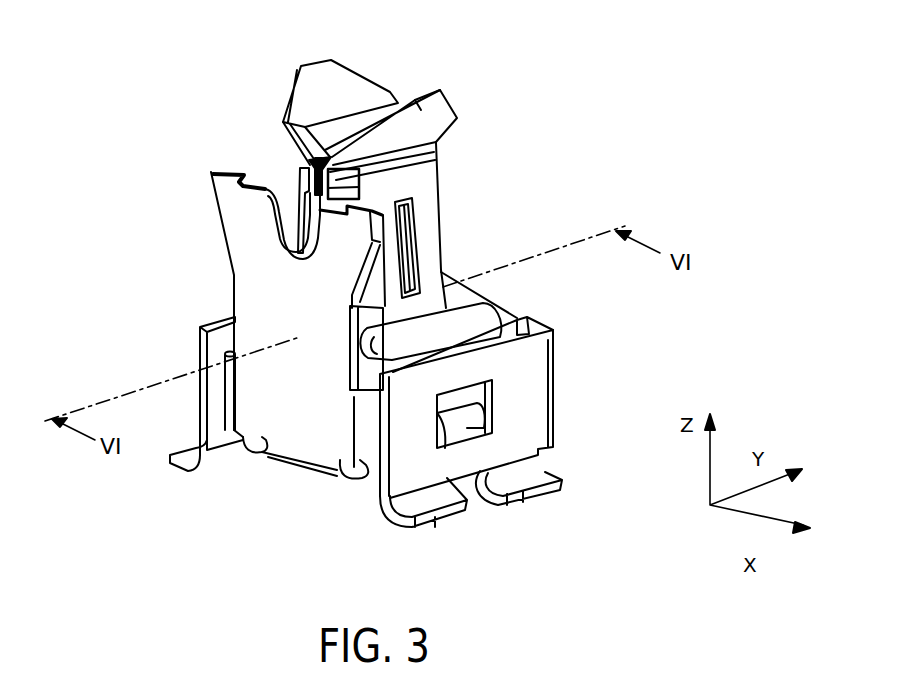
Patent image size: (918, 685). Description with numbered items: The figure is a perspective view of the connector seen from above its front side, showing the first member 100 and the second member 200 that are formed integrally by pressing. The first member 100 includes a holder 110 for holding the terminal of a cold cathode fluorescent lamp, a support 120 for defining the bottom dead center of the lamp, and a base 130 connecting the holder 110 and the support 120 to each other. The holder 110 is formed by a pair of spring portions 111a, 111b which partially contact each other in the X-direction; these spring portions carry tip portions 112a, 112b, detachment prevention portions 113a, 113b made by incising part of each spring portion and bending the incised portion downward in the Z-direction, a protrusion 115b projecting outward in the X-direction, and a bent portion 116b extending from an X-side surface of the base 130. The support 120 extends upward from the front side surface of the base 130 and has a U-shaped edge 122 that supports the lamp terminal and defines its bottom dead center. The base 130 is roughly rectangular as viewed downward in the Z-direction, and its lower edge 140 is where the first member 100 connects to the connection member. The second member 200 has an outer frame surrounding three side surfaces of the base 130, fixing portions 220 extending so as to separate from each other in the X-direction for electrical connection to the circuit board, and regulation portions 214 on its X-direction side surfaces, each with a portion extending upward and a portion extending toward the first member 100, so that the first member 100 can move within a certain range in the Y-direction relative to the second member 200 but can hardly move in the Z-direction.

The first member 100 is at (466, 233).
The holder 110 is at (112, 66).
The spring portion 111a is at (283, 126).
The spring portion 111b is at (302, 153).
The tip portion 112a is at (318, 68).
The tip portion 112b is at (440, 129).
The detachment prevention portion 113a is at (305, 172).
The detachment prevention portion 113b is at (318, 196).
The protrusion 115b is at (414, 202).
The bent portion 116b is at (484, 303).
The support 120 is at (245, 337).
The U-shaped edge 122 is at (280, 247).
The base 130 is at (362, 457).
The lower edge 140 is at (297, 460).
The second member 200 is at (596, 362).
The regulation portion 214 is at (470, 428).
The fixing portion 220 is at (187, 452).